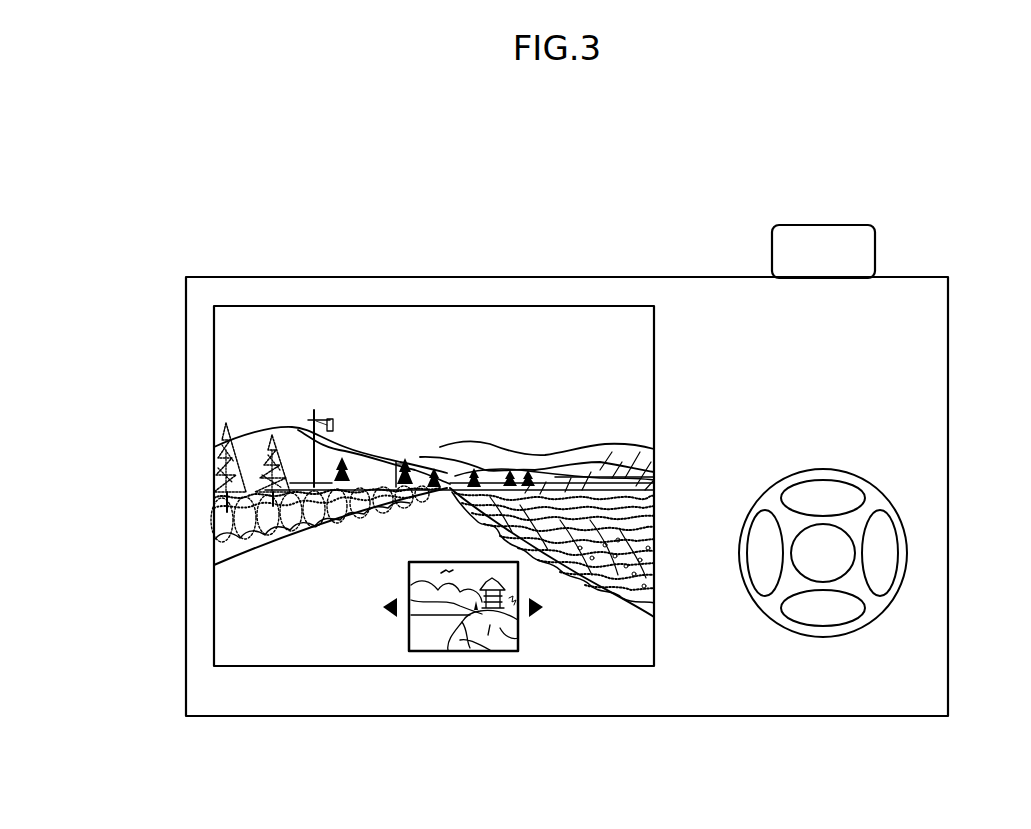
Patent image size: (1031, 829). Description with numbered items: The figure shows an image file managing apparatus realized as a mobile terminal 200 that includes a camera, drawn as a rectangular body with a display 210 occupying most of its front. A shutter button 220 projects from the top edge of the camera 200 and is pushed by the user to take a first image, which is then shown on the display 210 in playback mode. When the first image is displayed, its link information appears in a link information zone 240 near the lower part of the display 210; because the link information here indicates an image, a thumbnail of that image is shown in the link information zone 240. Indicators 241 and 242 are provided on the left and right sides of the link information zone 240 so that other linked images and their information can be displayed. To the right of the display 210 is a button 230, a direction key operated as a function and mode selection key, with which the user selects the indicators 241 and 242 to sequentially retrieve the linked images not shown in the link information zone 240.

The mobile terminal 200 is at (418, 277).
The display 210 is at (387, 538).
The shutter button 220 is at (821, 230).
The button 230 is at (898, 512).
The link information zone 240 is at (462, 646).
The indicator 241 is at (385, 612).
The indicator 242 is at (540, 615).